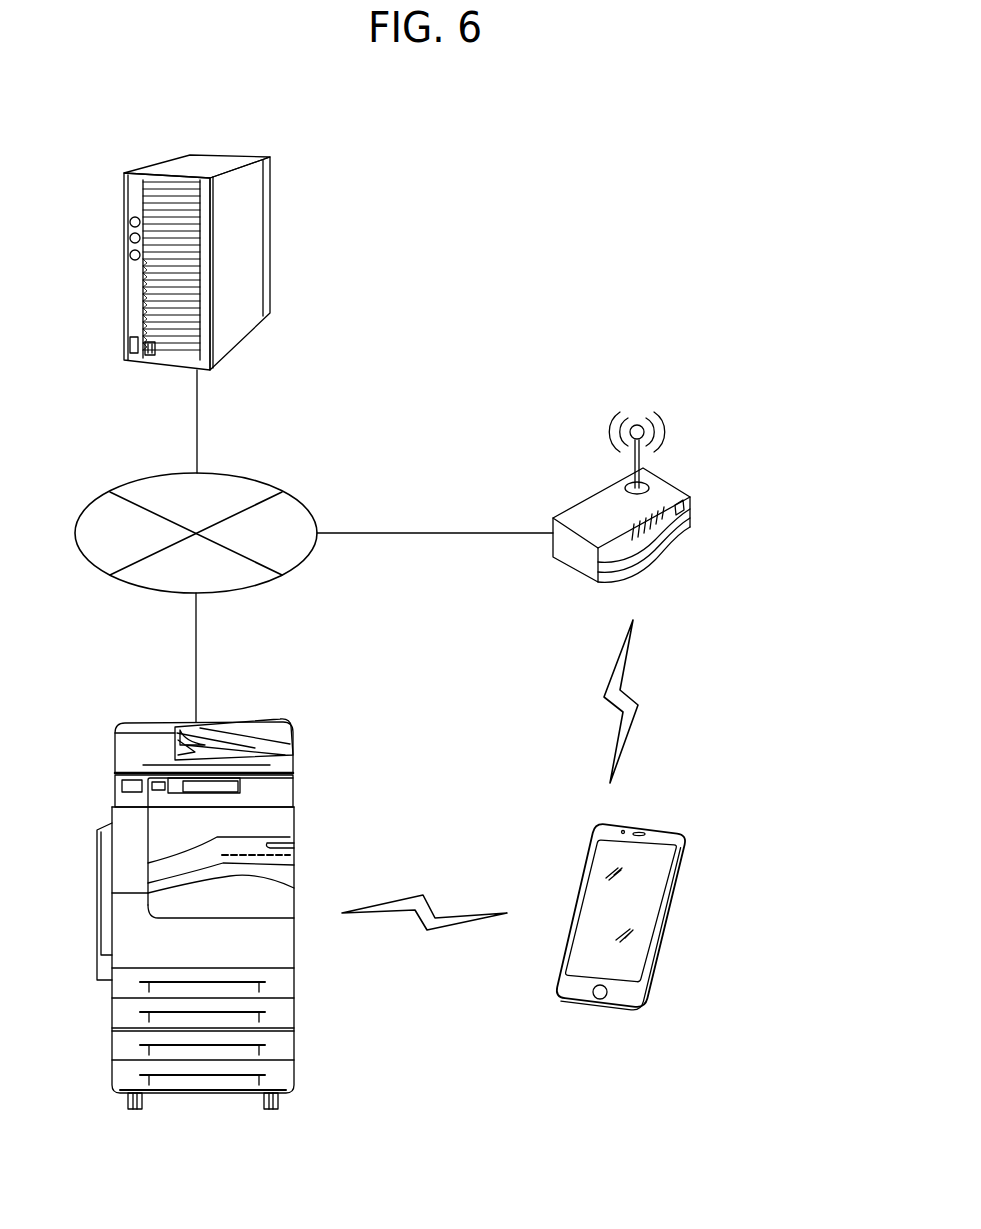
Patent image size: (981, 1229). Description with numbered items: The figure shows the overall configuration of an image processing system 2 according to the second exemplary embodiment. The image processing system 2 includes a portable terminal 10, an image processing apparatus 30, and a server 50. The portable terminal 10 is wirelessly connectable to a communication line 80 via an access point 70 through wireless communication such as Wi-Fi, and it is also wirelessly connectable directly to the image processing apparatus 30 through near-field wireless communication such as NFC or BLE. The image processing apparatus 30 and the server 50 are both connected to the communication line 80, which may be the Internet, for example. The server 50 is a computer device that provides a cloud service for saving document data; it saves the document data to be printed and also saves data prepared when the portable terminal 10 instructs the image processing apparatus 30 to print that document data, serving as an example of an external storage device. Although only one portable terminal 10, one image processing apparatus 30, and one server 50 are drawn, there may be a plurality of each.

The image processing system 2 is at (715, 158).
The portable terminal 10 is at (675, 906).
The image processing apparatus 30 is at (232, 720).
The server 50 is at (270, 208).
The access point 70 is at (692, 503).
The communication line 80 is at (260, 478).